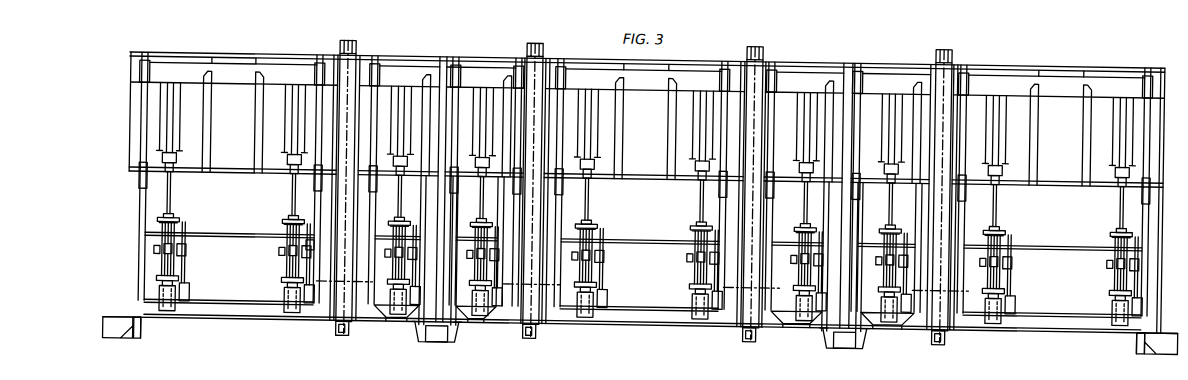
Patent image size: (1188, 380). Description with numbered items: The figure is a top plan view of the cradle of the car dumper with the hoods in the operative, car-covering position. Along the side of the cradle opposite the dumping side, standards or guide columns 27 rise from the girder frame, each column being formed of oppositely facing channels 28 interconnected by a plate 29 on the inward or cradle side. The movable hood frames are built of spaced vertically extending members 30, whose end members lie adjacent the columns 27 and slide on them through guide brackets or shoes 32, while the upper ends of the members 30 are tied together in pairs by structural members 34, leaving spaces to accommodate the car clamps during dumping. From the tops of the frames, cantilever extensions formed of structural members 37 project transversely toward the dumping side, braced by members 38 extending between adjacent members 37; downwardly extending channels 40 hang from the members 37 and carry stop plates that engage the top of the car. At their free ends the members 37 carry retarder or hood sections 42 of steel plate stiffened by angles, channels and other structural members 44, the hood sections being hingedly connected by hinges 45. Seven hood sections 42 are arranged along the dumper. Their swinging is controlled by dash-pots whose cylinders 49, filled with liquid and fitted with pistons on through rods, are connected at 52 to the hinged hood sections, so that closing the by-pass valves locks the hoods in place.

The standards or guide columns 27 is at (441, 338).
The channels 28 is at (136, 331).
The plate 29 is at (139, 317).
The vertically extending members 30 is at (423, 306).
The guide brackets or shoes 32 is at (150, 333).
The structural members 34 is at (237, 318).
The structural members 37 is at (144, 212).
The interbracing members 38 is at (244, 231).
The downwardly extending channels 40 is at (317, 244).
The retarder or hood sections 42 is at (954, 119).
The structural members 44 is at (207, 100).
The hinges 45 is at (143, 183).
The cylinders 49 is at (186, 223).
The connection 52 is at (176, 164).